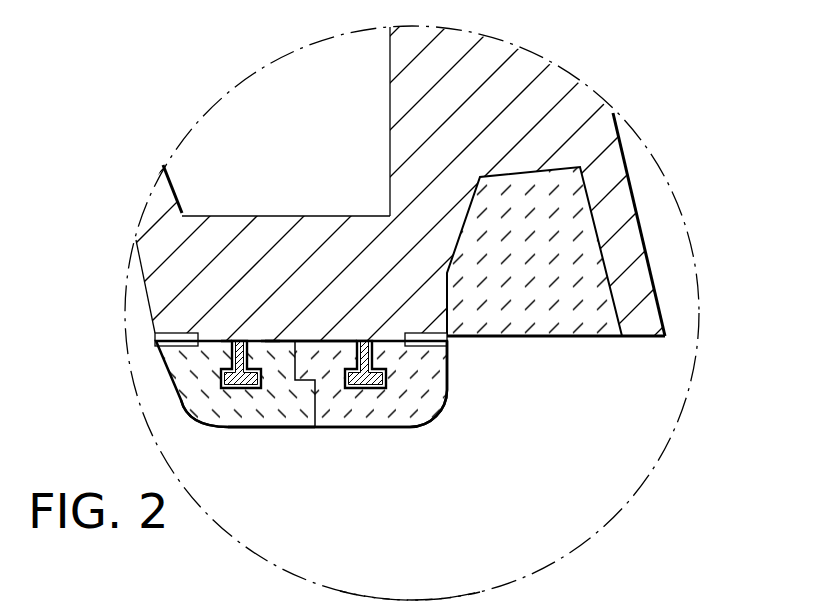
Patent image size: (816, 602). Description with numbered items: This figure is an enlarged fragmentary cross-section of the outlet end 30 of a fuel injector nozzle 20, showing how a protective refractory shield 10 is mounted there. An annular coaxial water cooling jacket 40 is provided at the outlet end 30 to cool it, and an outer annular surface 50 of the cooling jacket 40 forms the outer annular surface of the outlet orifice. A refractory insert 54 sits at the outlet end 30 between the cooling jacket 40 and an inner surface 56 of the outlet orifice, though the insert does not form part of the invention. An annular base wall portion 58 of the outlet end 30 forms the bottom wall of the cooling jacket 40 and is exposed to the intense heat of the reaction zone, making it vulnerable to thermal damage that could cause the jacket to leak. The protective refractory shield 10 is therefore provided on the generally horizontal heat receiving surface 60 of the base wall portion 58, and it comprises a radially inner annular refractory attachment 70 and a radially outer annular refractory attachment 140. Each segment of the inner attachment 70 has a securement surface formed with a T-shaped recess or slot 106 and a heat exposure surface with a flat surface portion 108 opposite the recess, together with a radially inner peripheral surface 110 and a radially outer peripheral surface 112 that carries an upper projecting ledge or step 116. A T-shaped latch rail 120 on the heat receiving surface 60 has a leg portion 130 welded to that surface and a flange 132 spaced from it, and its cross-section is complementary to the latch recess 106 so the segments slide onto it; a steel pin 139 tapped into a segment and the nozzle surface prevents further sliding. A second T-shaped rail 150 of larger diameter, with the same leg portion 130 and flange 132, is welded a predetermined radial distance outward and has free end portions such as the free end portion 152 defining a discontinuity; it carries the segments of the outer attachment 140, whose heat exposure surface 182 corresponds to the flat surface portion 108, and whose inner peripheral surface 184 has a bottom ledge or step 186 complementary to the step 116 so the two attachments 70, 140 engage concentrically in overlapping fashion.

The protective refractory shield 10 is at (384, 510).
The fuel injector nozzle 20 is at (636, 94).
The outlet end 30 is at (609, 459).
The annular coaxial water cooling jacket 40 is at (281, 126).
The outer annular surface 50 is at (145, 293).
The refractory insert 54 is at (590, 338).
The inner surface 56 is at (637, 207).
The annular base wall portion 58 is at (275, 213).
The heat receiving surface 60 is at (268, 345).
The radially inner annular refractory attachment 70 is at (334, 411).
The T-shaped recess or slot 106 is at (222, 350).
The flat surface portion 108 is at (391, 428).
The radially inner peripheral surface 110 is at (448, 385).
The radially outer peripheral surface 112 is at (306, 405).
The upper projecting ledge or step 116 is at (272, 342).
The T-shaped latch rail 120 is at (367, 343).
The leg portion 130 is at (388, 365).
The flange 132 is at (404, 423).
The steel pin 139 is at (157, 343).
The radially outer annular refractory attachment 140 is at (240, 432).
The T-shaped rail 150 is at (235, 340).
The free end portion 152 is at (175, 601).
The heat exposure surface 182 is at (262, 428).
The inner peripheral surface 184 is at (305, 344).
The bottom ledge or step 186 is at (327, 428).